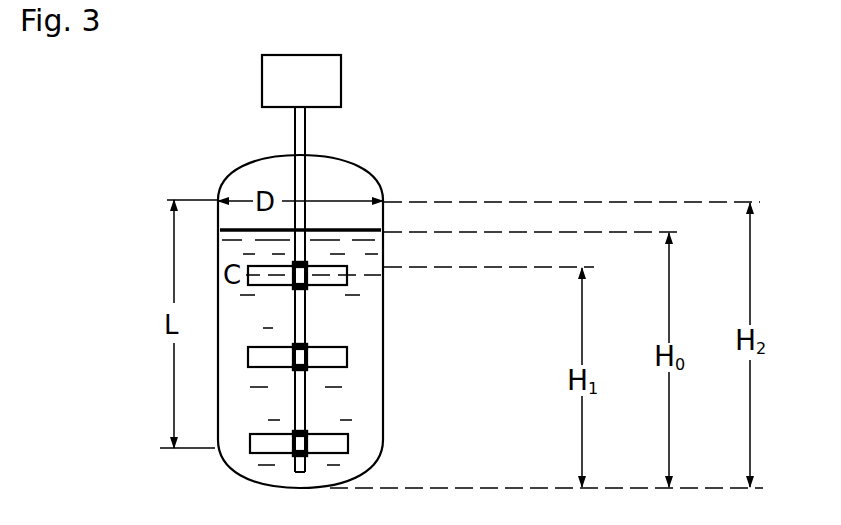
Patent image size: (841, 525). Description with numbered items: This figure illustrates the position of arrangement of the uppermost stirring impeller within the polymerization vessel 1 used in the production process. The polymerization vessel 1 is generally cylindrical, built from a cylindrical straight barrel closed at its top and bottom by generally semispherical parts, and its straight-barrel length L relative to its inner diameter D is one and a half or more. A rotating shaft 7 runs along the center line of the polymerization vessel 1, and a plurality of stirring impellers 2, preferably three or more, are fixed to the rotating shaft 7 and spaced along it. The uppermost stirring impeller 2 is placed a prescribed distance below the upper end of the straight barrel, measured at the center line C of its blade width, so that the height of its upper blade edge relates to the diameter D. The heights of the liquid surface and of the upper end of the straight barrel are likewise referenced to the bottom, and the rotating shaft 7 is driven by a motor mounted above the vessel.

The polymerization vessel 1 is at (391, 304).
The stirring impeller 2 is at (342, 264).
The rotating shaft 7 is at (305, 323).